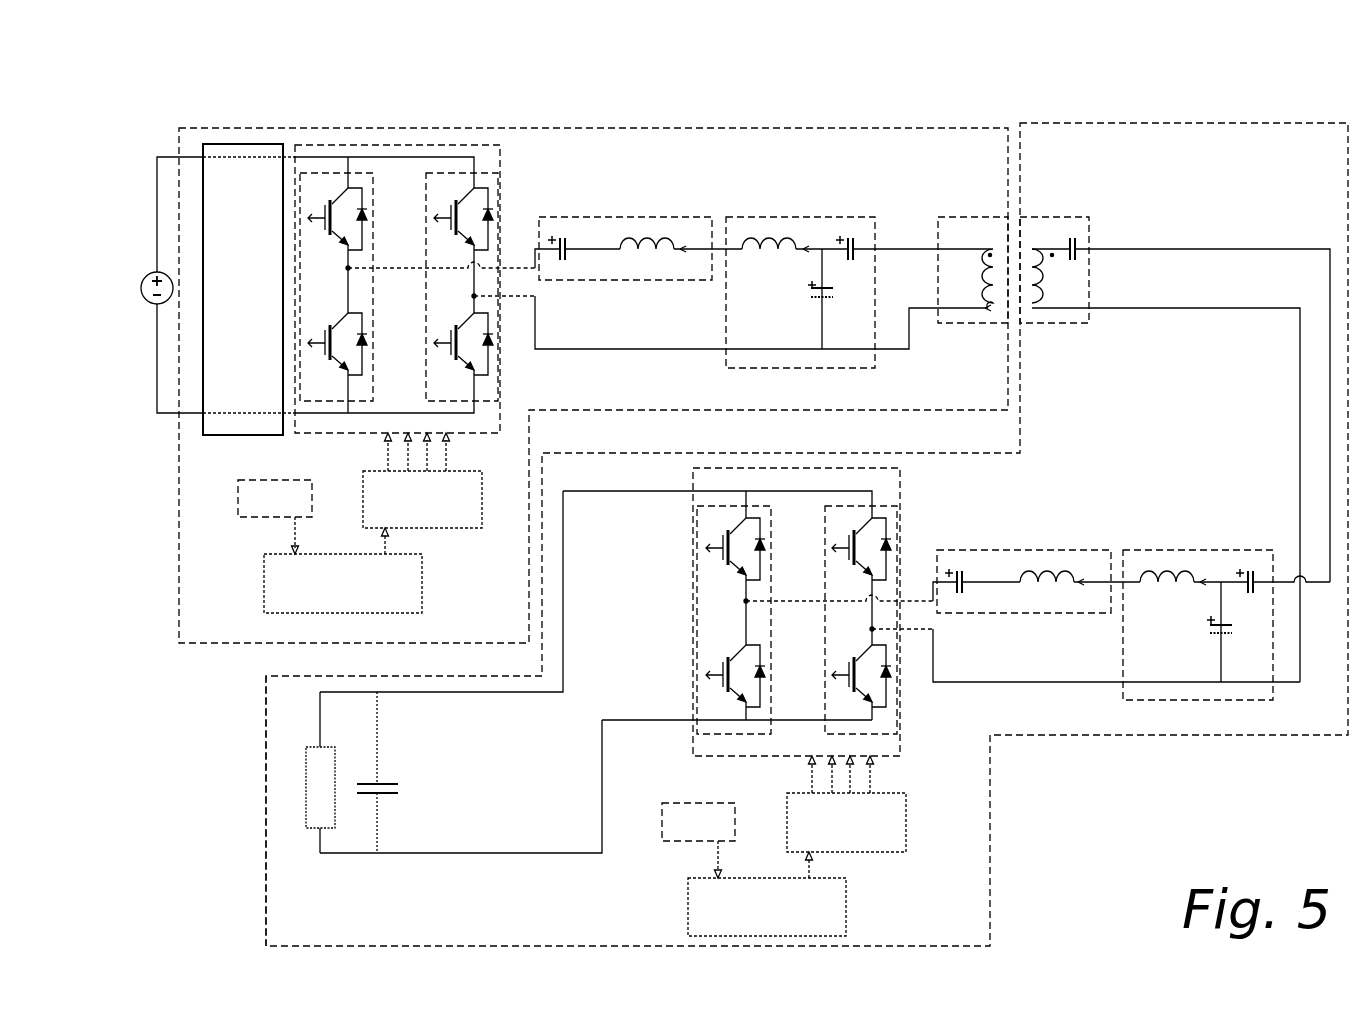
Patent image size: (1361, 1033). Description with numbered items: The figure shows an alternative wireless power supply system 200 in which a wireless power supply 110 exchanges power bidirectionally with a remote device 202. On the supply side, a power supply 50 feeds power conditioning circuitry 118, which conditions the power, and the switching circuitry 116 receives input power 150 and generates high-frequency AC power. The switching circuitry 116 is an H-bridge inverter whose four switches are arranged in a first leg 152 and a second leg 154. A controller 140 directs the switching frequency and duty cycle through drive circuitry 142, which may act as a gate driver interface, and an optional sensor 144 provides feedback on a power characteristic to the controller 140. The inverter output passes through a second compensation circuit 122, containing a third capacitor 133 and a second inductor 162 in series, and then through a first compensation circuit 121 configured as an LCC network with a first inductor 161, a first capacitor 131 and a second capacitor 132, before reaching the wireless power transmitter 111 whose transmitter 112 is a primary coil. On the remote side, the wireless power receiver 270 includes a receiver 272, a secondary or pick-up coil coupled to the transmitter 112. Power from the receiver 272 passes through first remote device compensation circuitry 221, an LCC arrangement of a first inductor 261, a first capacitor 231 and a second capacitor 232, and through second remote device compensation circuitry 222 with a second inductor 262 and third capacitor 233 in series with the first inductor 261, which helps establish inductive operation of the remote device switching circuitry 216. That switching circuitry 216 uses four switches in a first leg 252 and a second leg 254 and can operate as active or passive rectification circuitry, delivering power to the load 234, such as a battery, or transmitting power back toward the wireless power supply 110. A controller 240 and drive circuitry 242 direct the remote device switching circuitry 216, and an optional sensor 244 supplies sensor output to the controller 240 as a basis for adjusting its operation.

The power supply 50 is at (141, 284).
The wireless power supply 110 is at (408, 128).
The wireless power transmitter 111 is at (938, 228).
The transmitter 112 is at (990, 247).
The switching circuitry 116 is at (318, 145).
The power conditioning circuitry 118 is at (234, 144).
The first compensation circuit 121 is at (780, 217).
The second compensation circuit 122 is at (602, 217).
The first capacitor 131 is at (818, 297).
The second capacitor 132 is at (847, 258).
The third capacitor 133 is at (563, 256).
The controller 140 is at (422, 585).
The drive circuitry 142 is at (462, 528).
The sensor 144 is at (238, 485).
The input power 150 is at (469, 156).
The first leg 152 is at (374, 238).
The second leg 154 is at (426, 336).
The first inductor 161 is at (748, 255).
The second inductor 162 is at (628, 255).
The wireless power supply system 200 is at (1105, 100).
The remote device 202 is at (266, 778).
The remote device switching circuitry 216 is at (693, 636).
The first remote device compensation circuitry 221 is at (1175, 550).
The second remote device compensation circuitry 222 is at (997, 550).
The first capacitor 231 is at (1216, 634).
The second capacitor 232 is at (1246, 591).
The third capacitor 233 is at (960, 590).
The load 234 is at (310, 747).
The controller 240 is at (846, 912).
The drive circuitry 242 is at (885, 852).
The sensor 244 is at (662, 818).
The first leg 252 is at (772, 570).
The second leg 254 is at (825, 672).
The first inductor 261 is at (1147, 589).
The second inductor 262 is at (1025, 589).
The wireless power receiver 270 is at (1053, 323).
The receiver 272 is at (1046, 281).